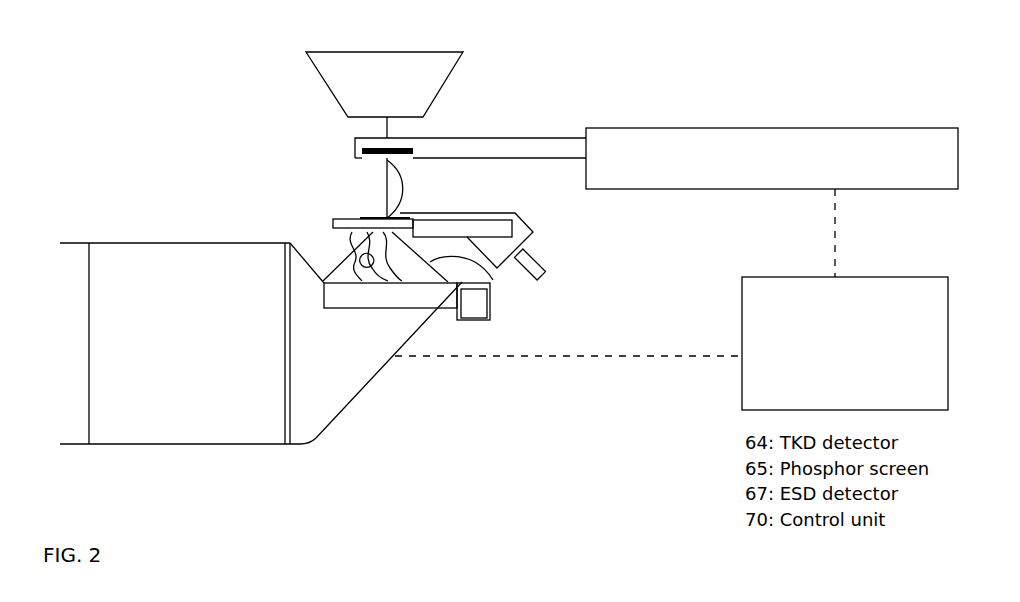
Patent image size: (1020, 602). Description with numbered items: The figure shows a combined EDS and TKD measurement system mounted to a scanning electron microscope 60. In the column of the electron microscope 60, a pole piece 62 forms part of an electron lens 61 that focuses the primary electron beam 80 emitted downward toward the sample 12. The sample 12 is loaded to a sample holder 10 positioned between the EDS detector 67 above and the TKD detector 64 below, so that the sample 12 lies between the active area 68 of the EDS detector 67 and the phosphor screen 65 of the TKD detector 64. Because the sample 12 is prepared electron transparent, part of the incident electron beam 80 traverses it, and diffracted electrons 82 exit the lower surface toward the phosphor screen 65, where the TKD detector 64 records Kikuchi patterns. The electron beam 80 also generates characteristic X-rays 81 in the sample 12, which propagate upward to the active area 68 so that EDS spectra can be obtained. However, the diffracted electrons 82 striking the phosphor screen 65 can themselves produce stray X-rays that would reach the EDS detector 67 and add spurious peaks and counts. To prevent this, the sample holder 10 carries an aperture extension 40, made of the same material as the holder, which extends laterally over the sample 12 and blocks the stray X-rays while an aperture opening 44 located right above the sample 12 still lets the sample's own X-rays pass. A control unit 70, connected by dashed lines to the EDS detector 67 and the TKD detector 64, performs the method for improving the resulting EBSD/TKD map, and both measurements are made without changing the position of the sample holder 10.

The sample holder 10 is at (523, 241).
The sample 12 is at (363, 218).
The aperture extension 40 is at (333, 221).
The aperture opening 44 is at (403, 213).
The electron microscope 60 is at (262, 97).
The electron lens 61 is at (384, 95).
The pole piece 62 is at (362, 88).
The TKD detector 64 is at (321, 365).
The phosphor screen 65 is at (392, 295).
The EDS detector 67 is at (744, 168).
The active area 68 is at (408, 138).
The control unit 70 is at (829, 353).
The electron beam 80 is at (385, 182).
The characteristic X-rays 81 is at (405, 178).
The diffracted electrons 82 is at (493, 280).